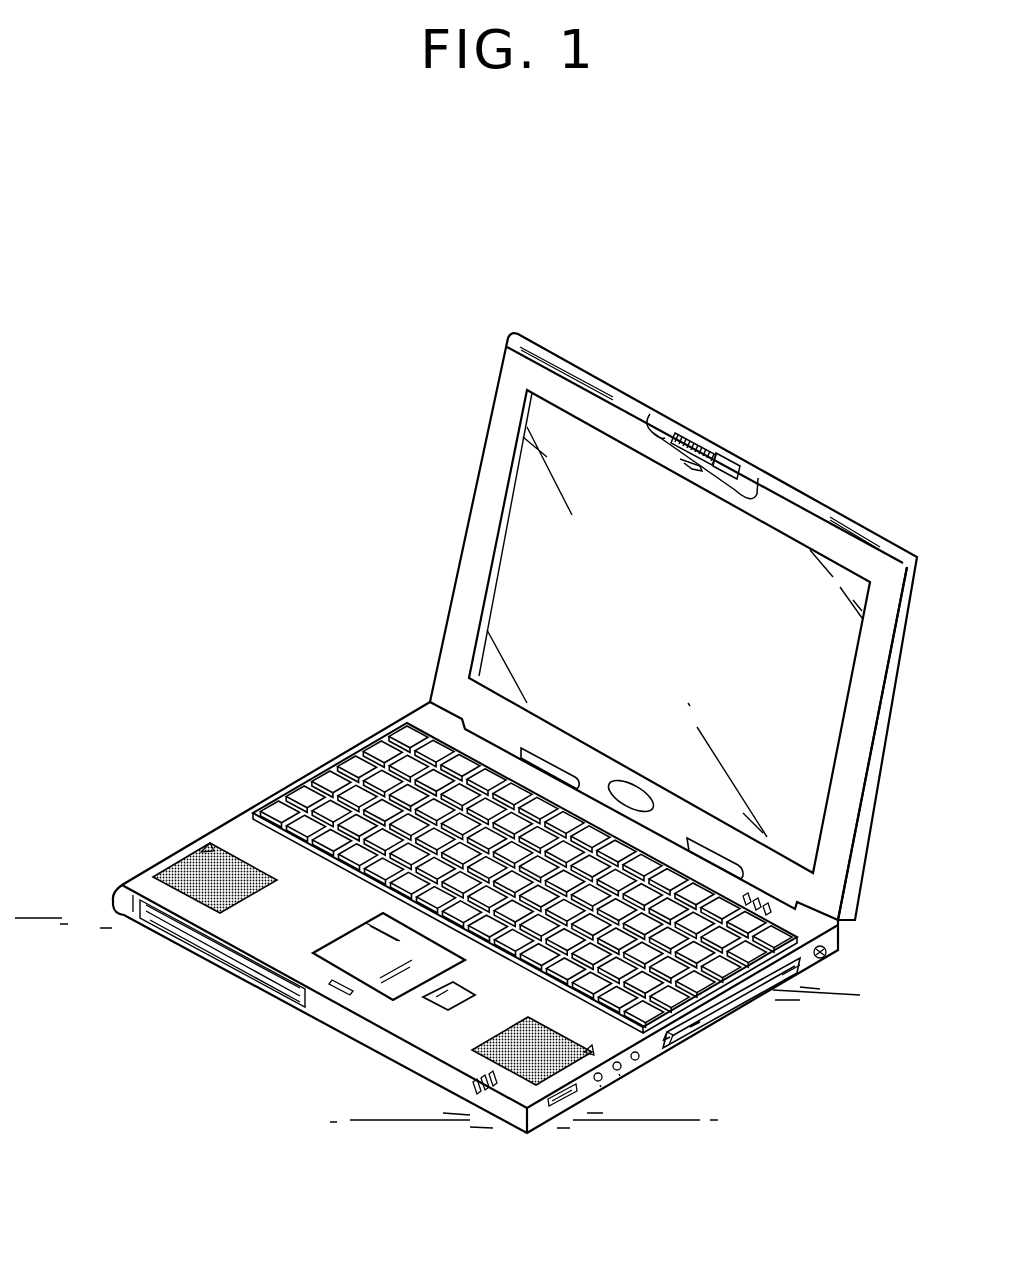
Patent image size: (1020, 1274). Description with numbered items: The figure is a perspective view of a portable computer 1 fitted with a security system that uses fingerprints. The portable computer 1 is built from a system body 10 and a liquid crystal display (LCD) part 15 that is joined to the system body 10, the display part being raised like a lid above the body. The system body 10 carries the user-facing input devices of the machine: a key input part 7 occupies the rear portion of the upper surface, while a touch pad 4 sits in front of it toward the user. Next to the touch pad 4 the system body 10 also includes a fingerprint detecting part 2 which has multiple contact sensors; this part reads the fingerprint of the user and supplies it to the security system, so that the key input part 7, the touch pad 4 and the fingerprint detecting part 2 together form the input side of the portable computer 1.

The portable computer 1 is at (418, 428).
The fingerprint detecting part 2 is at (447, 997).
The touch pad 4 is at (343, 962).
The key input part 7 is at (727, 987).
The system body 10 is at (670, 1043).
The liquid crystal display (LCD) part 15 is at (511, 575).